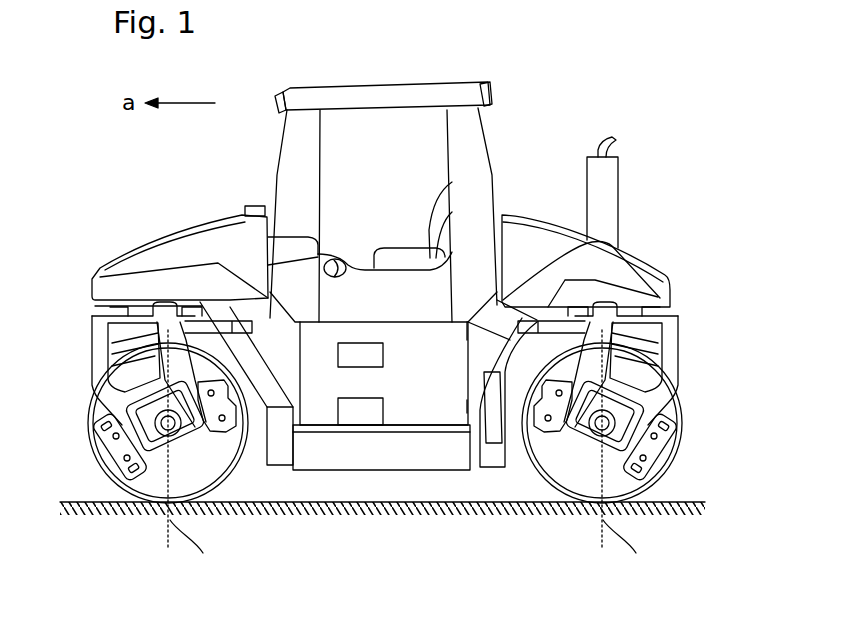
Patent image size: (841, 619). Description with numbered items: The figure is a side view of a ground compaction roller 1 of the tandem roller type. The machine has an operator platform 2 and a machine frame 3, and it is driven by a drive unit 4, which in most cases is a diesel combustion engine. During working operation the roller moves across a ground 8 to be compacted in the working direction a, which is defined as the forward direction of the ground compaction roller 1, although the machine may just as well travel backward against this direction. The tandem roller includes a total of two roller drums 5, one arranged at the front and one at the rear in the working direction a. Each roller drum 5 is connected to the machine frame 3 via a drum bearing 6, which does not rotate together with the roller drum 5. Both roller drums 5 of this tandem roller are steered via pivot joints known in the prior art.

The ground compaction roller 1 is at (538, 124).
The operator platform 2 is at (397, 160).
The machine frame 3 is at (218, 250).
The drive unit 4 is at (565, 278).
The roller drum 5 is at (148, 485).
The drum bearing 6 is at (92, 357).
The ground 8 is at (287, 505).